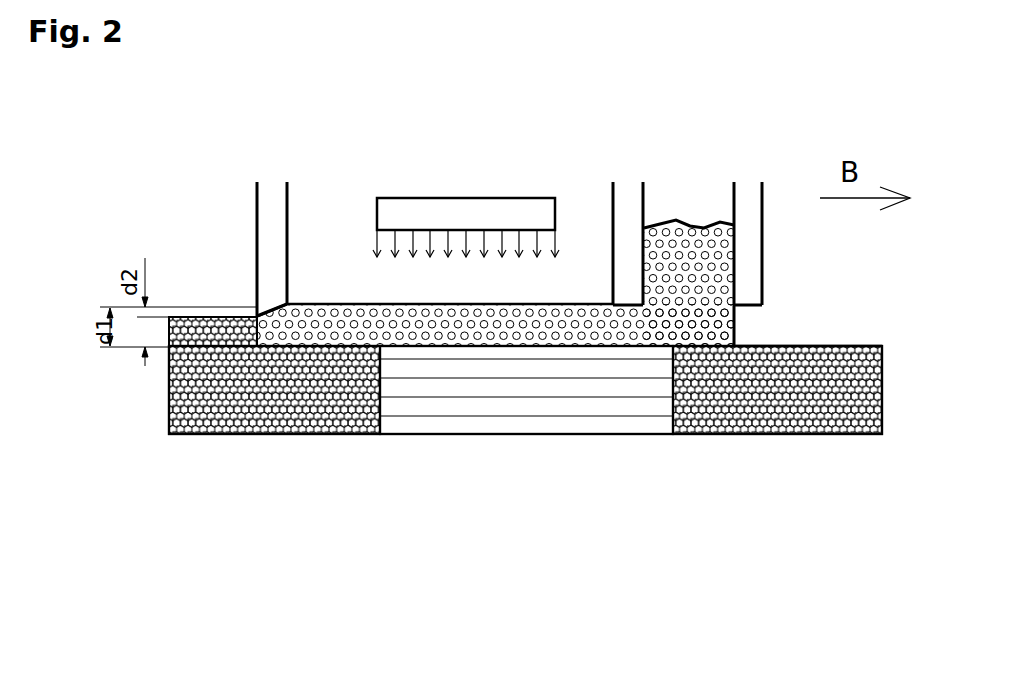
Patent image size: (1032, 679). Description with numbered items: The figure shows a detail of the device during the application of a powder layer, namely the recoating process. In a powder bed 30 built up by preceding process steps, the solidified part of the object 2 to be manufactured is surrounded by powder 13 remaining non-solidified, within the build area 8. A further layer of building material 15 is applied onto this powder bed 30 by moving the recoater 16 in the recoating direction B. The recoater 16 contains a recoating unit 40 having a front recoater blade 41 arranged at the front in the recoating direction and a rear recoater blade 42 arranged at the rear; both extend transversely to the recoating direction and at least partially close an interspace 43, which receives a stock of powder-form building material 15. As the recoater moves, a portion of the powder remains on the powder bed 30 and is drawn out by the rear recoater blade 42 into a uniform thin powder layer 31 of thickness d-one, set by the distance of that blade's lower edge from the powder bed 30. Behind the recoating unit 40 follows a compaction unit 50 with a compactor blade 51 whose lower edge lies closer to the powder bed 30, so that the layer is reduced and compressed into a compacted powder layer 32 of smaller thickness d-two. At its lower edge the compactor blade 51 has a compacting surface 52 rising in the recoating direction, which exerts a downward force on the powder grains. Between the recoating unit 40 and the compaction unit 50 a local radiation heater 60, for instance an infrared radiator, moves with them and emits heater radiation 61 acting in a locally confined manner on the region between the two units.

The object 2 is at (503, 407).
The build area 8 is at (853, 343).
The powder 13 is at (243, 417).
The building material 15 is at (733, 253).
The recoater 16 is at (667, 153).
The powder bed 30 is at (491, 391).
The powder layer 31 is at (367, 328).
The compacted powder layer 32 is at (218, 327).
The recoating unit 40 is at (703, 175).
The front recoater blade 41 is at (757, 287).
The rear recoater blade 42 is at (620, 270).
The interspace 43 is at (702, 205).
The compaction unit 50 is at (287, 175).
The compactor blade 51 is at (275, 228).
The compacting surface 52 is at (273, 300).
The local radiation heater 60 is at (450, 205).
The heater radiation 61 is at (490, 260).